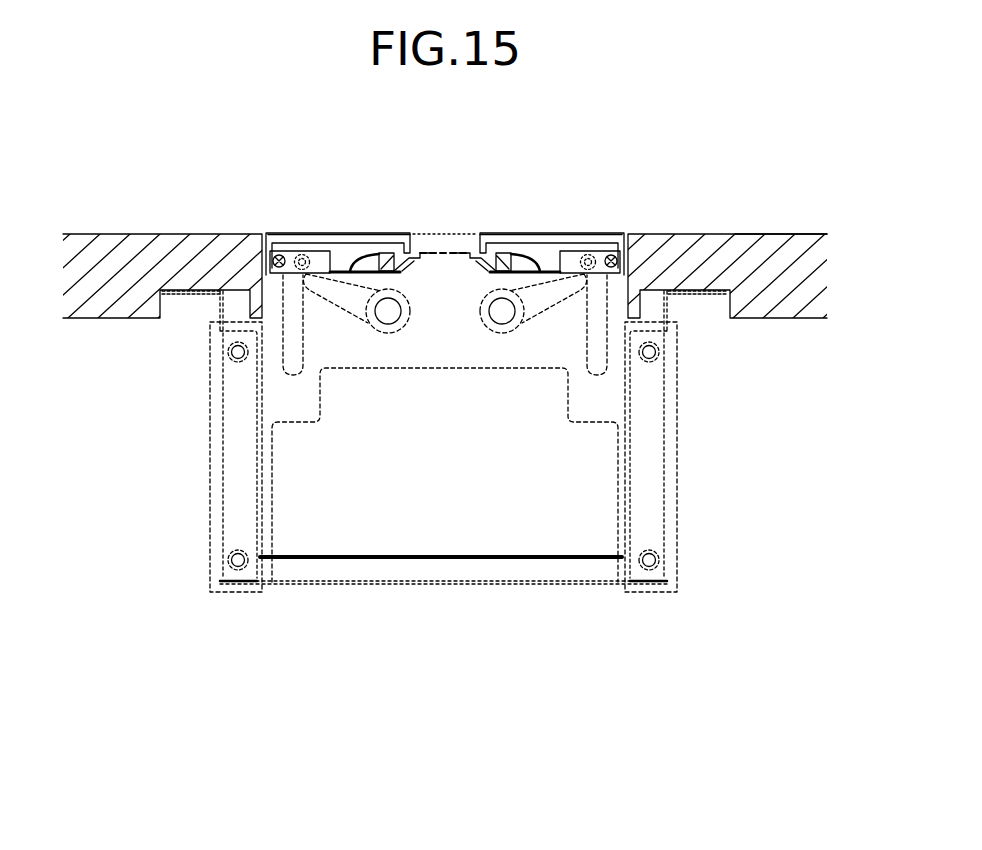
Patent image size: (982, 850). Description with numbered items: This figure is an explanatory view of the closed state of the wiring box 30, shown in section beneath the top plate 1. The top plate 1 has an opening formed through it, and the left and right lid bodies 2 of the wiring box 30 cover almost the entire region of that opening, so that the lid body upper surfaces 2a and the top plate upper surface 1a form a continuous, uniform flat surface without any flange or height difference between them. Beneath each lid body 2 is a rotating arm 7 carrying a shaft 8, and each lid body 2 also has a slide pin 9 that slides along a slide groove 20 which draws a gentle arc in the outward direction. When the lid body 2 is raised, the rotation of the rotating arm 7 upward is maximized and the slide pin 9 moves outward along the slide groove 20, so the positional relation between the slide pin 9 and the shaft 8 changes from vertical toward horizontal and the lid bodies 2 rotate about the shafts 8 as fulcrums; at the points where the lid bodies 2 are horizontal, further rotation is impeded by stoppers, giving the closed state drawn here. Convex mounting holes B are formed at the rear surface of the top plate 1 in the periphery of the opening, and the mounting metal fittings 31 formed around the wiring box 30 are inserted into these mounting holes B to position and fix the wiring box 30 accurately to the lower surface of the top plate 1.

The top plate 1 is at (710, 235).
The top plate upper surface 1a is at (780, 235).
The lid body 2 is at (347, 228).
The lid body upper surface 2a is at (369, 233).
The rotating arm 7 is at (328, 305).
The shaft 8 is at (302, 255).
The slide pin 9 is at (279, 256).
The slide groove 20 is at (292, 347).
The wiring box 30 is at (452, 601).
The mounting metal fitting 31 is at (198, 295).
The mounting hole B is at (182, 305).